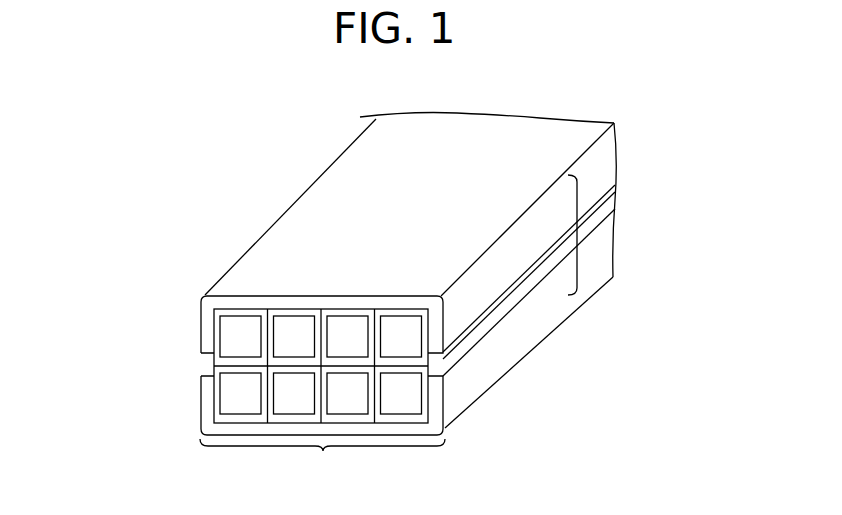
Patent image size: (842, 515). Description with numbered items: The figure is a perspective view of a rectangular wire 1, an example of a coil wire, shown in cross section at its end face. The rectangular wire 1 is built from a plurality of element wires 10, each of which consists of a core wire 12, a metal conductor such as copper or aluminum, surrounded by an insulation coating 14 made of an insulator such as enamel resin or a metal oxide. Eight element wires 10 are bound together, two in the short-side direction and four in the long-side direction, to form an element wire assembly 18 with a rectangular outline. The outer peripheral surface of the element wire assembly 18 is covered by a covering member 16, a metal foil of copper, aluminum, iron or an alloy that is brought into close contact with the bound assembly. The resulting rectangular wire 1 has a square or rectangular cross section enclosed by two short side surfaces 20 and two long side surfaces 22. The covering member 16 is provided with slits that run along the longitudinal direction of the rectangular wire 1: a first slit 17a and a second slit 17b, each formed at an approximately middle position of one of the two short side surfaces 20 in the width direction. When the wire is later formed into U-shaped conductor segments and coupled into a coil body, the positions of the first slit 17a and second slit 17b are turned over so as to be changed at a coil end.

The rectangular wire 1 is at (215, 221).
The element wire 10 is at (142, 305).
The core wire 12 is at (220, 326).
The insulation coating 14 is at (214, 341).
The covering member 16 is at (302, 215).
The first slit 17a is at (478, 336).
The second slit 17b is at (207, 365).
The element wire assembly 18 is at (294, 310).
The short side surface 20 is at (577, 253).
The long side surface 22 is at (322, 462).